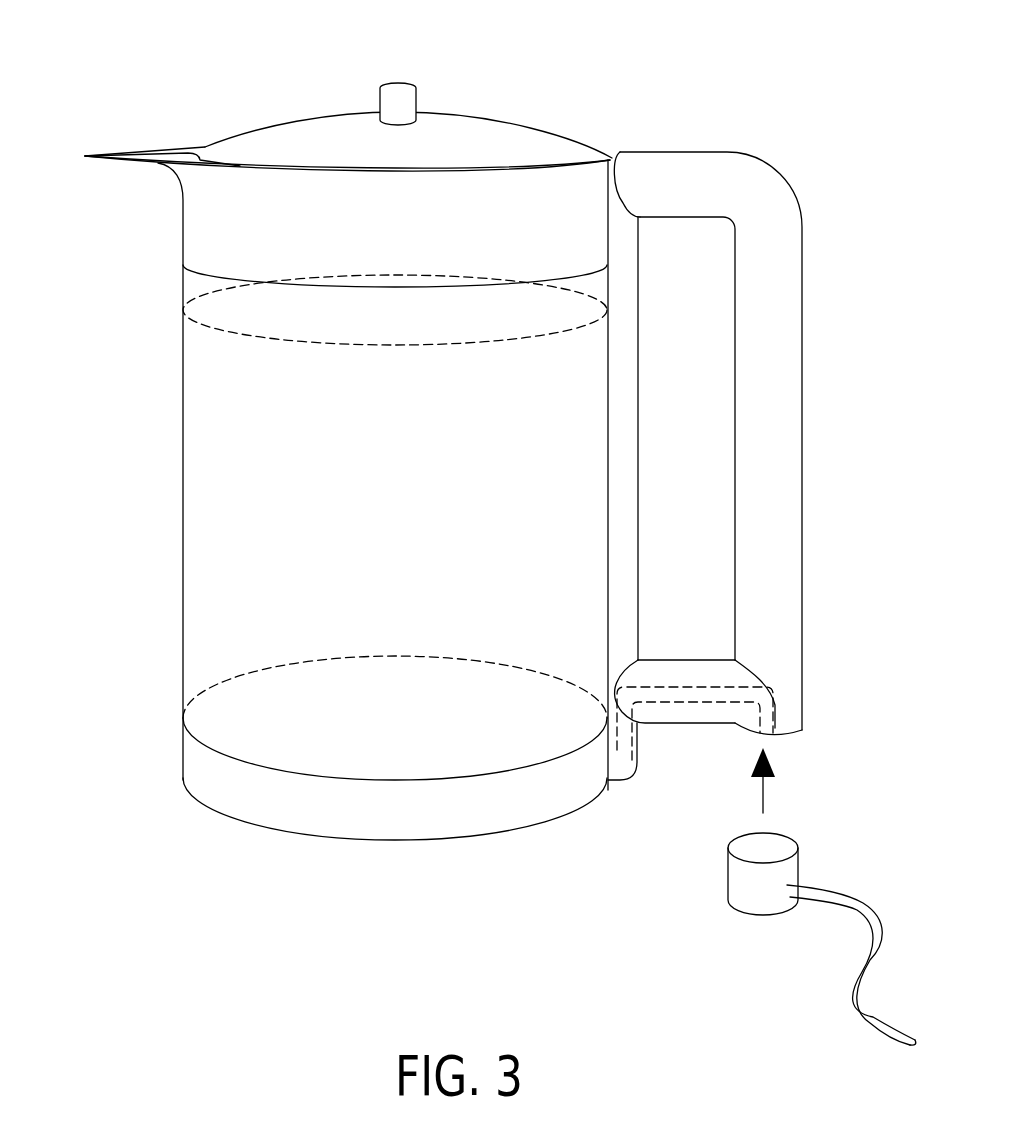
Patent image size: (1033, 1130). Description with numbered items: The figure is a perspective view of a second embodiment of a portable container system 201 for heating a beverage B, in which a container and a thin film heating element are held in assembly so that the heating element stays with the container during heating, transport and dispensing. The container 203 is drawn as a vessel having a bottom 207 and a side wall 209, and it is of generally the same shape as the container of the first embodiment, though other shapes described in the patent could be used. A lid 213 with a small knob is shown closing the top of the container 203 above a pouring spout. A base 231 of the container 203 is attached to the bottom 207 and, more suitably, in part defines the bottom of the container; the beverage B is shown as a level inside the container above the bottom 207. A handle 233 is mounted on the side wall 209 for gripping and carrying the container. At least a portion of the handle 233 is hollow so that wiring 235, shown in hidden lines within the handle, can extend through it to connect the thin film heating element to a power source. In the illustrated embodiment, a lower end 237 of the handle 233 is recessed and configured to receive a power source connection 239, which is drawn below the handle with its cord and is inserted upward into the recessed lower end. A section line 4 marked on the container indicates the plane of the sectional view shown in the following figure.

The portable container system 201 is at (232, 62).
The container 203 is at (183, 343).
The bottom 207 is at (213, 705).
The side wall 209 is at (183, 515).
The lid 213 is at (467, 113).
The base 231 is at (158, 745).
The handle 233 is at (732, 152).
The wiring 235 is at (687, 687).
The lower end of the handle 237 is at (793, 733).
The power source connection 239 is at (728, 873).
The beverage B is at (205, 292).
The section line 4- 4 is at (280, 720).